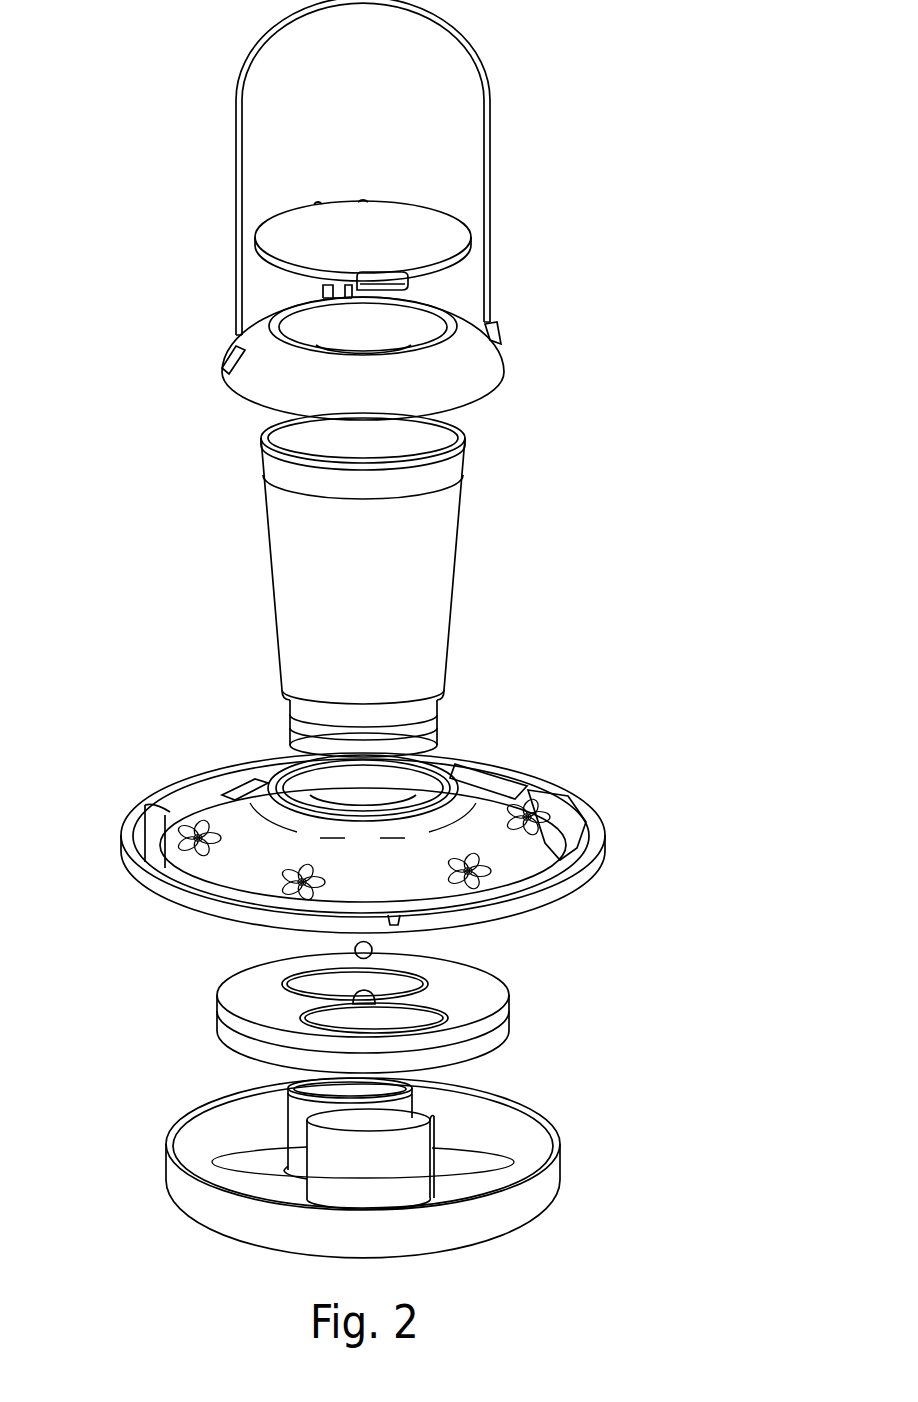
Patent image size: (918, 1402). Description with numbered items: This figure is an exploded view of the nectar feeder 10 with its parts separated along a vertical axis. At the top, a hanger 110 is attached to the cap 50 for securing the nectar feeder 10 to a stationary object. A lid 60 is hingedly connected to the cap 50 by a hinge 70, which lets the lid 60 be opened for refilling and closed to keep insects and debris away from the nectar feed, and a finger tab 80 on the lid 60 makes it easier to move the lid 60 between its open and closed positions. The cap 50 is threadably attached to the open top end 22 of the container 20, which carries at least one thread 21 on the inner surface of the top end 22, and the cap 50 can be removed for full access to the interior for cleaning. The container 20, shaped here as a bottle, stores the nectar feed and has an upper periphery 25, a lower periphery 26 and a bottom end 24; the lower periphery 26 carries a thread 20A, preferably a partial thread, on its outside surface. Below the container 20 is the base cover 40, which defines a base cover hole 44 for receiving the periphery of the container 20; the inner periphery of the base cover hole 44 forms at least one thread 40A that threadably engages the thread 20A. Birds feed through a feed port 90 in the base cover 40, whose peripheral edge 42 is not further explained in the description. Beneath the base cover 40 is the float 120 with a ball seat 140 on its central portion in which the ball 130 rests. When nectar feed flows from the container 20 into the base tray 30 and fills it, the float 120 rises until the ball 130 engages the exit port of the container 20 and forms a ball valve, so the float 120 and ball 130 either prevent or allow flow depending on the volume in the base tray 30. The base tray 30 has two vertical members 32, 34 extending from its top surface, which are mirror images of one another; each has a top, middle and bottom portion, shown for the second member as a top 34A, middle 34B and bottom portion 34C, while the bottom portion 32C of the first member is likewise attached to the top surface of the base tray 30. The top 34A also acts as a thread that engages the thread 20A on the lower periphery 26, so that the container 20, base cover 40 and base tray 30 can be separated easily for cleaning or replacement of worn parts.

The nectar feeder 10 is at (650, 130).
The hanger 110 is at (490, 130).
The lid 60 is at (470, 238).
The hinge 70 is at (315, 287).
The finger tab 80 is at (407, 285).
The cap 50 is at (500, 375).
The container 20 is at (354, 569).
The thread 21 is at (468, 418).
The top end 22 is at (262, 445).
The upper periphery 25 is at (443, 468).
The lower periphery 26 is at (437, 703).
The bottom end 24 is at (437, 740).
The thread 20A is at (283, 705).
The base cover 40 is at (423, 846).
The thread 40A is at (485, 760).
The base cover hole 44 is at (248, 760).
The base outer rim 42 is at (590, 860).
The feed port 90 is at (300, 875).
The ball 130 is at (375, 948).
The ball seat 140 is at (370, 993).
The float 120 is at (435, 1006).
The base tray 30 is at (354, 1153).
The vertical member 32 is at (480, 1142).
The bottom portion 32C is at (432, 1197).
The vertical member 34 is at (347, 1134).
The top portion 34A is at (290, 1092).
The middle portion 34B is at (288, 1128).
The bottom portion 34C is at (305, 1158).